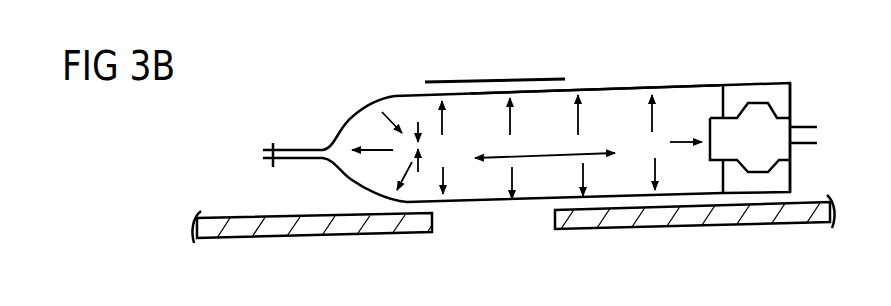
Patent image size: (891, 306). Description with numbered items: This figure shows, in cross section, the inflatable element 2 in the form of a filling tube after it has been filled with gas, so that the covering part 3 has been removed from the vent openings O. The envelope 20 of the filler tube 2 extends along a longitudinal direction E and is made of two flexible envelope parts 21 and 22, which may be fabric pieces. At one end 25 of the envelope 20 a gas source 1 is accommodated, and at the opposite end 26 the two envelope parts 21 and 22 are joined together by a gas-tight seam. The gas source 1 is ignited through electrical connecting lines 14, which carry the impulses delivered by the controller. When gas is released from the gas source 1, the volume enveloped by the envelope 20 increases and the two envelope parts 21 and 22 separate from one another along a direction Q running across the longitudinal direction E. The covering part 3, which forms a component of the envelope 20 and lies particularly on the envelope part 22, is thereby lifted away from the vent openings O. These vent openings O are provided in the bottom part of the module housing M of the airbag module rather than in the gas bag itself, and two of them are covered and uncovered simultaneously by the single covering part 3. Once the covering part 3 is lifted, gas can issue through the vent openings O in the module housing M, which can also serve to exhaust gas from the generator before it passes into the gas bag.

The gas source 1 is at (785, 160).
The inflatable element 2 is at (667, 81).
The covering part 3 is at (510, 80).
The connecting lines 14 is at (810, 124).
The envelope 20 is at (597, 87).
The envelope part 21 is at (358, 186).
The envelope part 22 is at (392, 96).
The end 25 is at (791, 104).
The opposite end 26 is at (271, 143).
The direction Q is at (422, 148).
The longitudinal direction E is at (530, 158).
The vent opening O is at (433, 222).
The module housing M is at (762, 214).